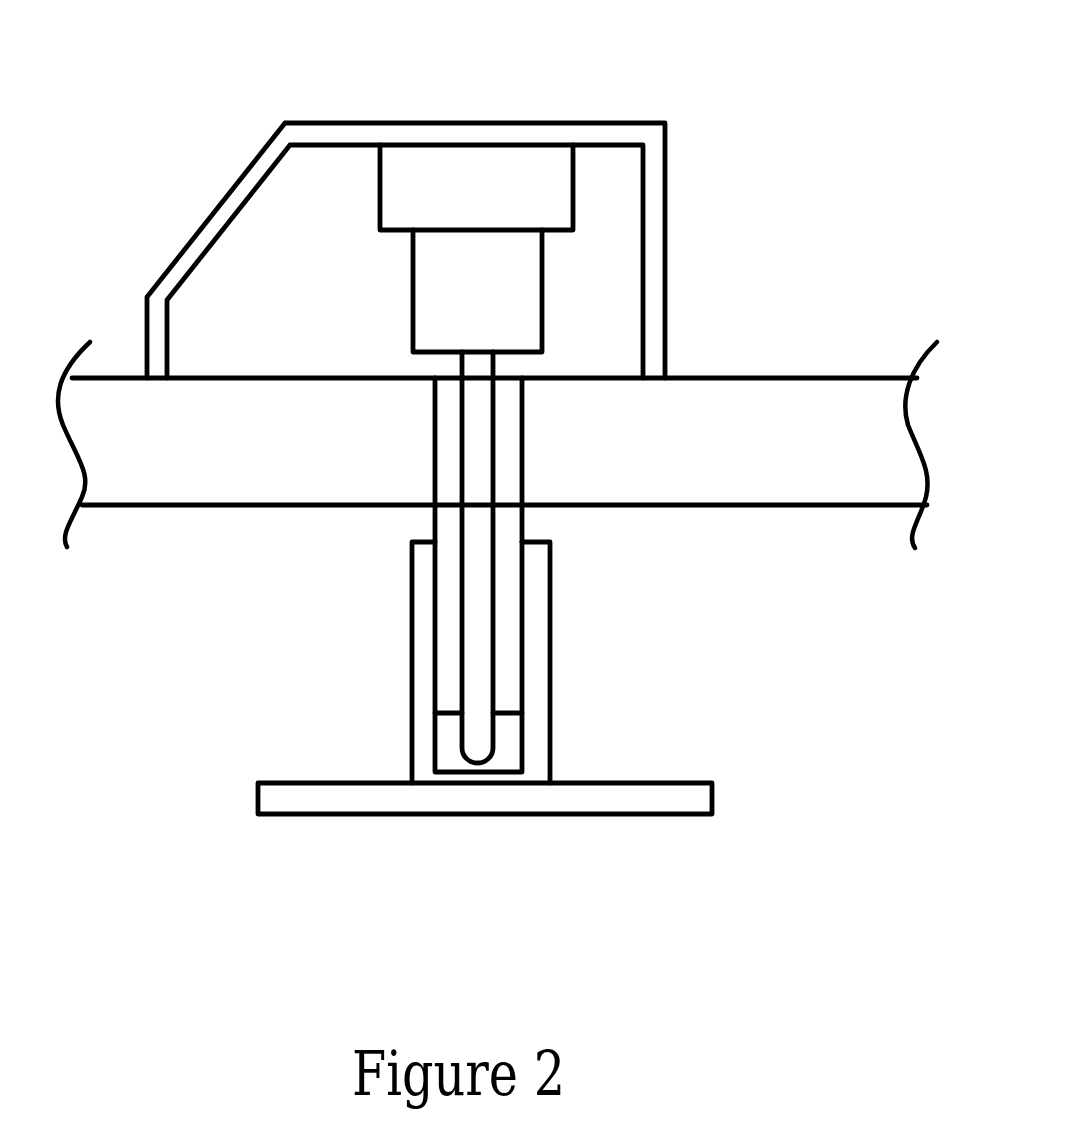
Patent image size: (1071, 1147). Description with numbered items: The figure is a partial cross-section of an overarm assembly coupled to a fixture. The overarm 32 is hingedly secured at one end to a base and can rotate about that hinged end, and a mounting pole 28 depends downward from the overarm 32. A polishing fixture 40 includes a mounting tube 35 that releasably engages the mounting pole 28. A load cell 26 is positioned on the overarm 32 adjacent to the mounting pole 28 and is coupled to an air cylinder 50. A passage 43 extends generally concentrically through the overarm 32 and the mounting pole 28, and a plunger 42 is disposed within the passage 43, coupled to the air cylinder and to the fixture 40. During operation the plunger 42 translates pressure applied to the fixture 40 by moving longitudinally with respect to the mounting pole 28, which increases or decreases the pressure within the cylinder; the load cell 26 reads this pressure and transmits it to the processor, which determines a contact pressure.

The load cell 26 is at (532, 170).
The air cylinder 50 is at (442, 275).
The passage 43 is at (515, 423).
The plunger 42 is at (483, 612).
The mounting pole 28 is at (435, 520).
The overarm 32 is at (150, 507).
The mounting tube 35 is at (553, 717).
The polishing fixture 40 is at (688, 800).